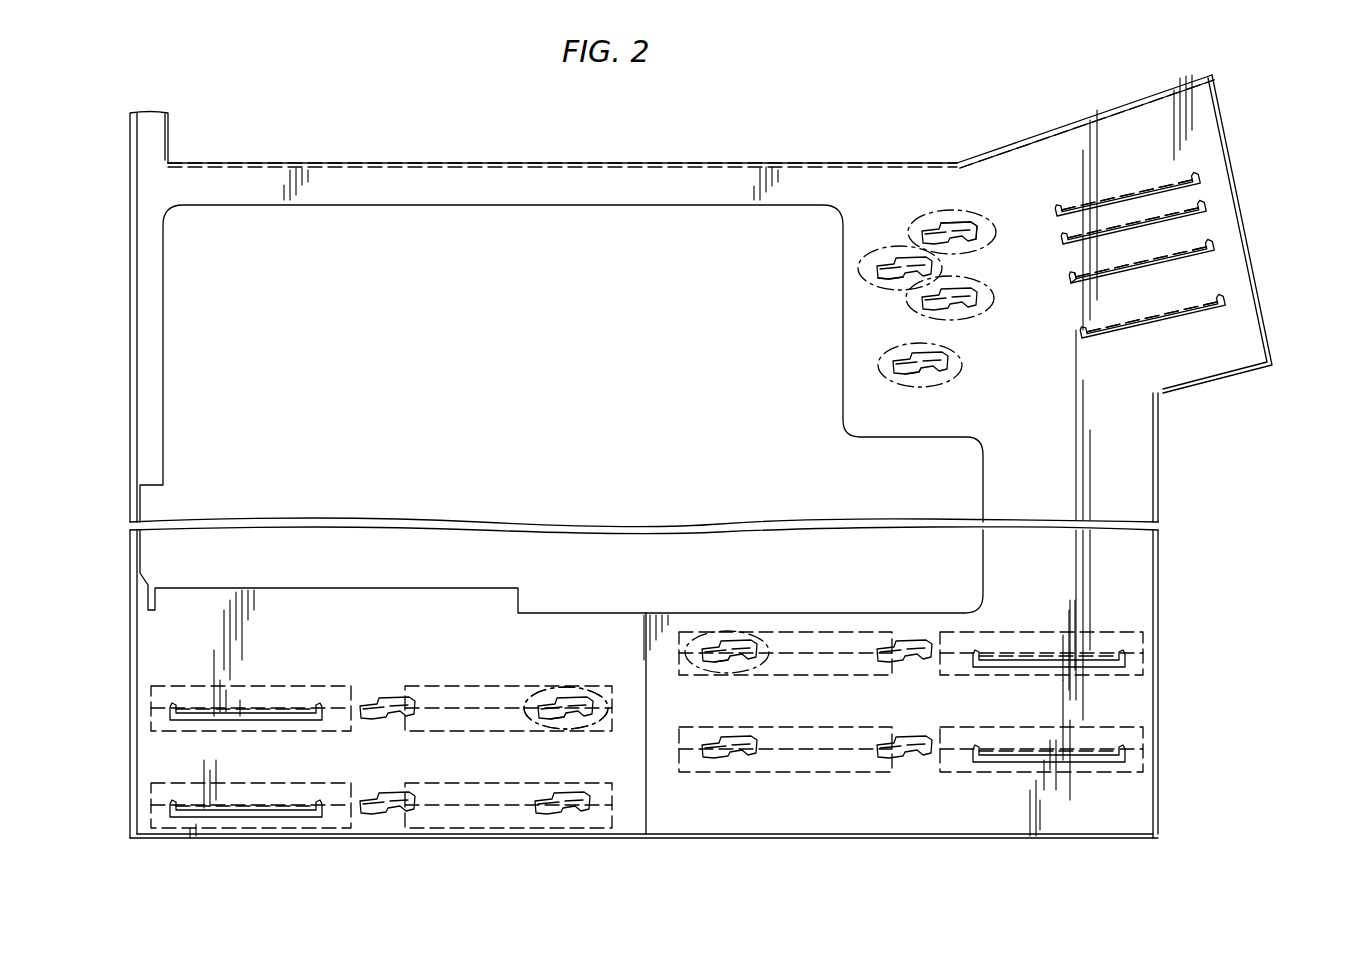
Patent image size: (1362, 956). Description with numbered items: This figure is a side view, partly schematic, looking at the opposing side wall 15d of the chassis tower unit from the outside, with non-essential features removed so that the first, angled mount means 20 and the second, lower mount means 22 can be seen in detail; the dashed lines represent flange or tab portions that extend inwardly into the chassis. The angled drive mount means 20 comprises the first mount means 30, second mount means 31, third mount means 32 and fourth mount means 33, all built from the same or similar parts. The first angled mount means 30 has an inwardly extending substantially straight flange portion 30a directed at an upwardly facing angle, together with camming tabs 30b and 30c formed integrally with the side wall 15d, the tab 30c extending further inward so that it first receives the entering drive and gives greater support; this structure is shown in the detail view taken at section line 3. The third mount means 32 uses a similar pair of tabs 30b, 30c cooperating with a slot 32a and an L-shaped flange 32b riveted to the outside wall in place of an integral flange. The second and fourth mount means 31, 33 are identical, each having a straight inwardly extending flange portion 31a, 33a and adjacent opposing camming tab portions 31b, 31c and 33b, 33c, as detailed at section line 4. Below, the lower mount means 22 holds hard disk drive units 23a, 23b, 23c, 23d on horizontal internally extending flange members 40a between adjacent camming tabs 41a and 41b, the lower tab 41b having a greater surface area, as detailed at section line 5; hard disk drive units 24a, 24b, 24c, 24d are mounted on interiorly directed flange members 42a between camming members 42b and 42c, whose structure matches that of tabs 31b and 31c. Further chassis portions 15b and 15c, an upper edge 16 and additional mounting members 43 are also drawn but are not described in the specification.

The right side wall 15b is at (1158, 568).
The left side wall 15c is at (130, 370).
The opposing side wall 15d is at (1054, 455).
The top wall flange 16 is at (1240, 122).
The angled drive mount means 20 is at (830, 241).
The lower mount means 22 is at (1172, 663).
The hard disk drive unit 23a is at (272, 686).
The hard disk drive unit 23b is at (472, 686).
The hard disk drive unit 23c is at (270, 783).
The hard disk drive unit 23d is at (502, 783).
The hard disk drive unit 24a is at (874, 675).
The hard disk drive unit 24b is at (1028, 675).
The hard disk drive unit 24c is at (774, 772).
The hard disk drive unit 24d is at (1024, 772).
The first angled mount means 30 is at (1198, 182).
The inwardly extending straight flange portion 30a is at (1090, 208).
The camming tab 30b is at (930, 225).
The camming tab 30c is at (966, 228).
The second angled mount means 31 is at (1208, 210).
The inwardly extending flange portion 31a is at (1175, 216).
The camming tab portion 31b is at (890, 262).
The camming tab portion 31c is at (880, 280).
The third angled mount means 32 is at (1228, 244).
The slot 32a is at (1208, 258).
The L-shaped flange member 32b is at (1075, 278).
The fourth angled mount means 33 is at (1228, 306).
The inwardly extending straight flange portion 33a is at (1144, 320).
The camming tab portion 33b is at (888, 370).
The camming tab portion 33c is at (930, 380).
The section line 3 is at (976, 292).
The section line 4 is at (878, 356).
The section line 5 is at (580, 686).
The internally extending flange member 40a is at (208, 708).
The camming tab member 41a is at (574, 706).
The lower camming tab member 41b is at (540, 705).
The interiorly directed flange member 42a is at (1006, 655).
The camming member 42b is at (718, 646).
The camming member 42c is at (738, 664).
The retaining clip 43 is at (428, 702).